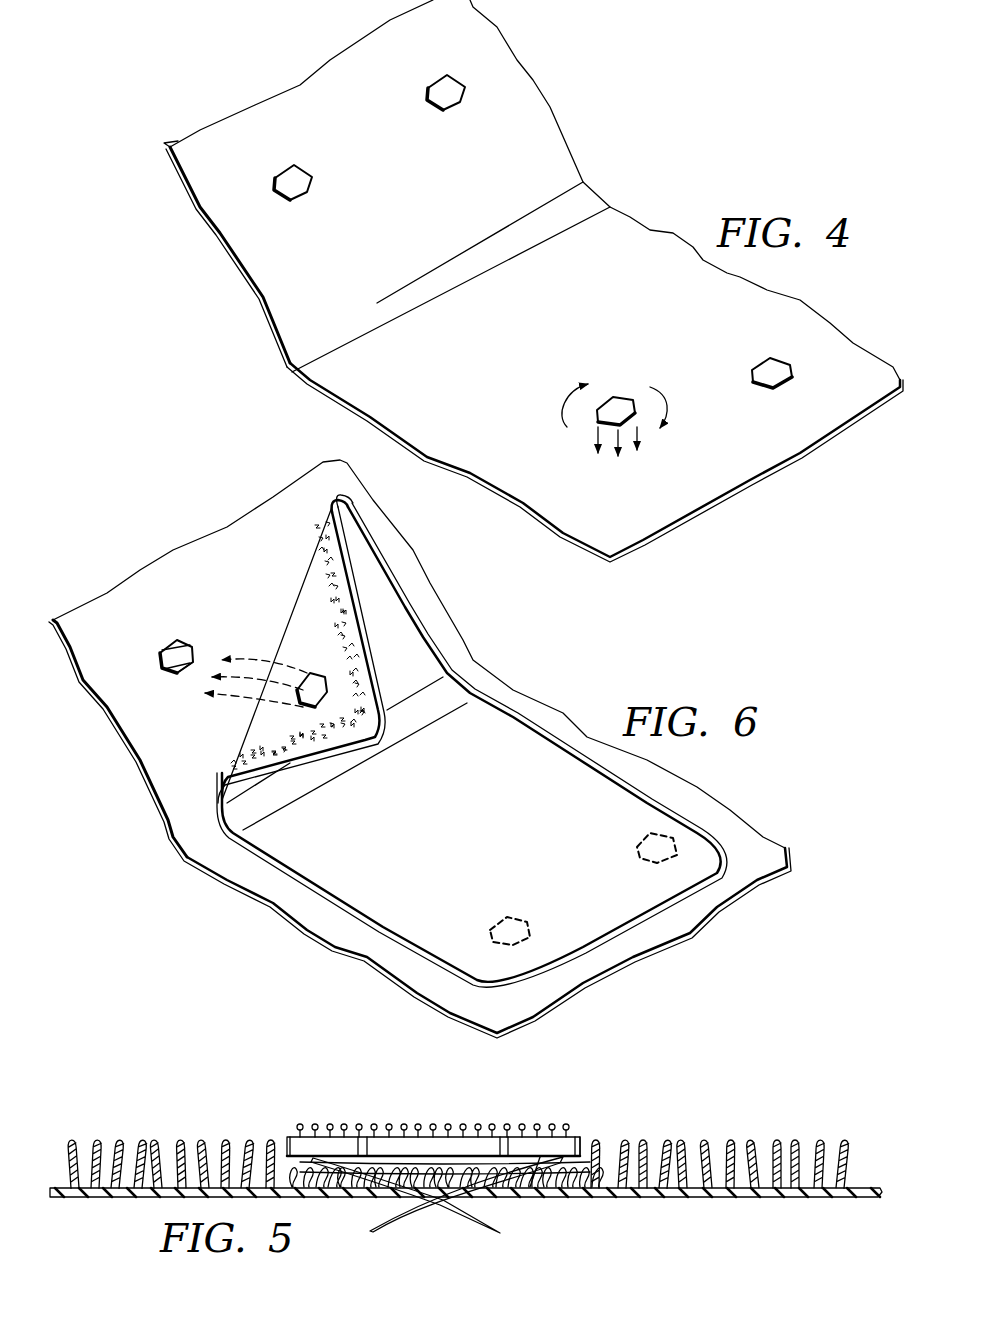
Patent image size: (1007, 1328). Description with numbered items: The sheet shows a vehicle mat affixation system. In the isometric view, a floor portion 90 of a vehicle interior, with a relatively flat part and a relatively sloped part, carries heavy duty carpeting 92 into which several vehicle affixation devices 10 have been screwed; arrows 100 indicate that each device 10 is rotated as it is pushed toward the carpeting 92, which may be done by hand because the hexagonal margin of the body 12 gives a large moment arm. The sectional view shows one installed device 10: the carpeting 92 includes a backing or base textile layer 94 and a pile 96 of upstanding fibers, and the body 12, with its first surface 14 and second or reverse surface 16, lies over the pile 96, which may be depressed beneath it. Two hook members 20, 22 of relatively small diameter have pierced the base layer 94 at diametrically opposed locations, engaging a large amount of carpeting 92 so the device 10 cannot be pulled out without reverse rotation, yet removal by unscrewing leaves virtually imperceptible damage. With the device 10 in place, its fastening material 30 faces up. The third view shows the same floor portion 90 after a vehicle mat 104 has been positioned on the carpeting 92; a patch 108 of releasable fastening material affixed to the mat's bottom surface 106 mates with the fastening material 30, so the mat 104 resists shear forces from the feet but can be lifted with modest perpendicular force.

In FIG. 4, the vehicle affixation device 10 is at (448, 96).
In FIG. 6, the vehicle affixation device 10 is at (177, 638).
In FIG. 5, the vehicle affixation device 10 is at (441, 1109).
In FIG. 5, the body 12 is at (585, 1137).
In FIG. 5, the first surface 14 is at (530, 1187).
In FIG. 6, the second or reverse surface 16 is at (187, 677).
In FIG. 5, the second or reverse surface 16 is at (282, 1136).
In FIG. 5, the hook member 20 is at (463, 1220).
In FIG. 5, the hook member 22 is at (400, 1220).
In FIG. 6, the fastening material 30 is at (167, 663).
In FIG. 5, the fastening material 30 is at (394, 1121).
In FIG. 4, the floor portion 90 is at (757, 483).
In FIG. 6, the floor portion 90 is at (657, 957).
In FIG. 4, the carpeting 92 is at (867, 357).
In FIG. 6, the carpeting 92 is at (763, 843).
In FIG. 5, the carpeting 92 is at (481, 1168).
In FIG. 5, the backing or base textile layer 94 is at (793, 1200).
In FIG. 5, the pile 96 is at (777, 1143).
In FIG. 4, the arrows 100 is at (567, 410).
In FIG. 6, the vehicle mat 104 is at (490, 828).
In FIG. 6, the bottom surface 106 is at (350, 650).
In FIG. 6, the patch 108 is at (313, 680).